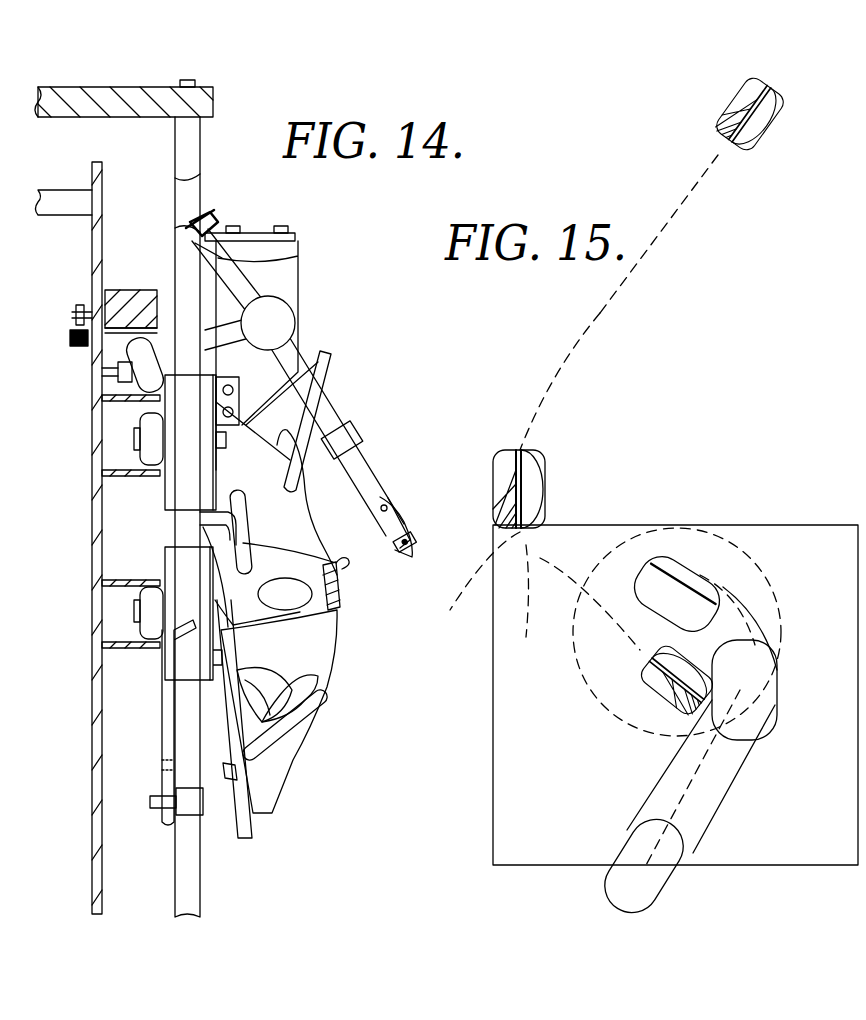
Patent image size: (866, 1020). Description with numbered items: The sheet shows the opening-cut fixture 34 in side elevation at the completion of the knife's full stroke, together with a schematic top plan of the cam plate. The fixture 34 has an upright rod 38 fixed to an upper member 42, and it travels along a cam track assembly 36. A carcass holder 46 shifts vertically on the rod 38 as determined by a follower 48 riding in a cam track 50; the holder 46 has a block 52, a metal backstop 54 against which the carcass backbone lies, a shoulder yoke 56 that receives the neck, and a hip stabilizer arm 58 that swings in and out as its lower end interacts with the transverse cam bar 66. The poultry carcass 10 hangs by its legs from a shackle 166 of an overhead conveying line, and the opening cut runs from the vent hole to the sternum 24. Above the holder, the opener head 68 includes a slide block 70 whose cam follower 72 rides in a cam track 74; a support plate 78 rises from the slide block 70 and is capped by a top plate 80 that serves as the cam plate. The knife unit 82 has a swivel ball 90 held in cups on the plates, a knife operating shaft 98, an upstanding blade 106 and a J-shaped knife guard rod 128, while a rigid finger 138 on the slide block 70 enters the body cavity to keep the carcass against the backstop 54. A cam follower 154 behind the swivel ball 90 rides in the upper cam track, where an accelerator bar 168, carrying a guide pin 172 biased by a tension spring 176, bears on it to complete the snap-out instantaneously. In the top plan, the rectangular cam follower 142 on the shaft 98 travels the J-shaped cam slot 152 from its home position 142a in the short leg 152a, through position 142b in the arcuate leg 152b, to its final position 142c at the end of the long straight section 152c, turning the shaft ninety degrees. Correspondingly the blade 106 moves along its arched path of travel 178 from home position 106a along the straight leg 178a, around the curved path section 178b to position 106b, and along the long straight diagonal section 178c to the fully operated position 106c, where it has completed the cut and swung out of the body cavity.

In FIG. 14, the poultry carcass 10 is at (347, 656).
In FIG. 14, the sternum 24 is at (333, 562).
In FIG. 14, the fixture 34 is at (217, 80).
In FIG. 14, the cam track assembly 36 is at (83, 178).
In FIG. 14, the upright rod 38 is at (190, 160).
In FIG. 14, the upper member 42 is at (90, 87).
In FIG. 14, the carcass holder 46 is at (162, 545).
In FIG. 14, the follower 48 is at (148, 627).
In FIG. 14, the cam track 50 is at (120, 602).
In FIG. 14, the block 52 is at (183, 588).
In FIG. 14, the backstop 54 is at (195, 706).
In FIG. 14, the shoulder yoke 56 is at (308, 739).
In FIG. 14, the hip stabilizer arm 58 is at (160, 740).
In FIG. 14, the cam bar 66 is at (157, 807).
In FIG. 14, the opener head 68 is at (312, 244).
In FIG. 14, the slide block 70 is at (195, 485).
In FIG. 14, the cam follower 72 is at (138, 461).
In FIG. 14, the cam track 74 is at (118, 432).
In FIG. 14, the support plate 78 is at (307, 271).
In FIG. 14, the top plate 80 is at (252, 233).
In FIG. 15, the top plate 80 is at (505, 793).
In FIG. 14, the knife unit 82 is at (355, 408).
In FIG. 14, the swivel ball 90 is at (278, 303).
In FIG. 15, the swivel ball 90 is at (773, 578).
In FIG. 14, the knife operating shaft 98 is at (317, 362).
In FIG. 14, the blade 106 is at (389, 542).
In FIG. 14, the knife guard rod 128 is at (396, 494).
In FIG. 14, the finger 138 is at (220, 523).
In FIG. 14, the cam follower 142 is at (193, 247).
In FIG. 14, the cam follower 154 is at (132, 351).
In FIG. 14, the shackle 166 is at (330, 367).
In FIG. 14, the accelerator bar 168 is at (120, 290).
In FIG. 14, the guide pin 172 is at (75, 312).
In FIG. 14, the tension spring 176 is at (70, 338).
In FIG. 15, the home position of blade 106a is at (650, 684).
In FIG. 15, the intermediate position of blade 106b is at (525, 470).
In FIG. 15, the final position of blade 106c is at (769, 115).
In FIG. 15, the home position of cam follower 142a is at (658, 547).
In FIG. 15, the intermediate position of cam follower 142b is at (768, 710).
In FIG. 15, the final position of cam follower 142c is at (656, 888).
In FIG. 15, the cam slot 152 is at (725, 700).
In FIG. 15, the short leg of cam slot 152a is at (727, 572).
In FIG. 15, the arcuate leg of cam slot 152b is at (766, 640).
In FIG. 15, the long straight section of cam slot 152c is at (715, 831).
In FIG. 15, the path of travel of blade 178 is at (605, 346).
In FIG. 15, the straight leg of path 178a is at (574, 604).
In FIG. 15, the curved path section 178b is at (475, 584).
In FIG. 15, the long straight diagonal path section 178c is at (650, 250).